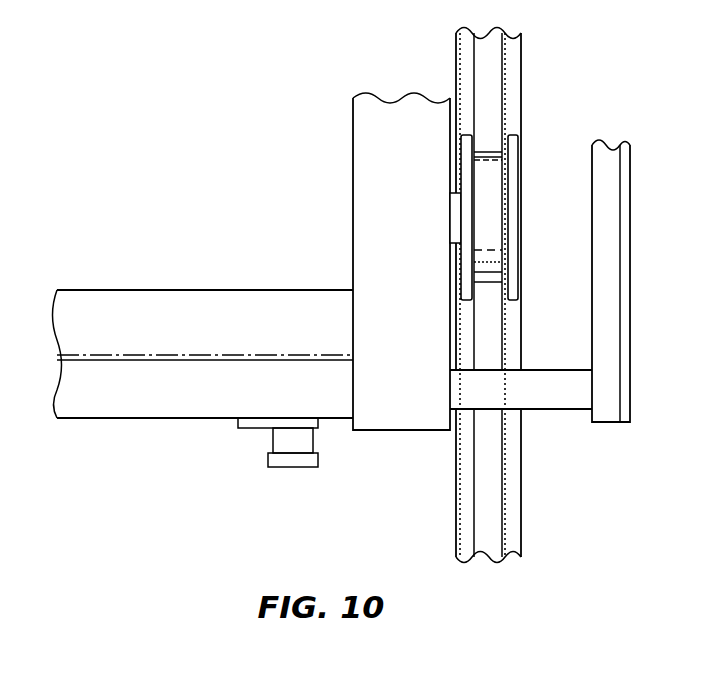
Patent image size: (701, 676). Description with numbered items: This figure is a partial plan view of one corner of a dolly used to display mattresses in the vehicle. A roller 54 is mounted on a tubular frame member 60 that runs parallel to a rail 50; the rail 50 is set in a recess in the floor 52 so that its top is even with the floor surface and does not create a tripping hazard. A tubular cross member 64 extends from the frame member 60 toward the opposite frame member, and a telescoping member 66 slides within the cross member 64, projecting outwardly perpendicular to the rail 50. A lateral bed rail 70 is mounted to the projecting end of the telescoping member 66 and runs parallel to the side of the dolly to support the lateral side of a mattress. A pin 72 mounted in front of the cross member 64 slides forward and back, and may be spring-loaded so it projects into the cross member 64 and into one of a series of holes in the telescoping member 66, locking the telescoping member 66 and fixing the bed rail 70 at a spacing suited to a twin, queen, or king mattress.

The rail 50 is at (487, 83).
The floor 52 is at (553, 160).
The roller 54 is at (512, 215).
The tubular frame member 60 is at (365, 151).
The tubular cross member 64 is at (161, 300).
The telescoping member 66 is at (550, 412).
The lateral bed rail 70 is at (631, 177).
The pin 72 is at (297, 458).